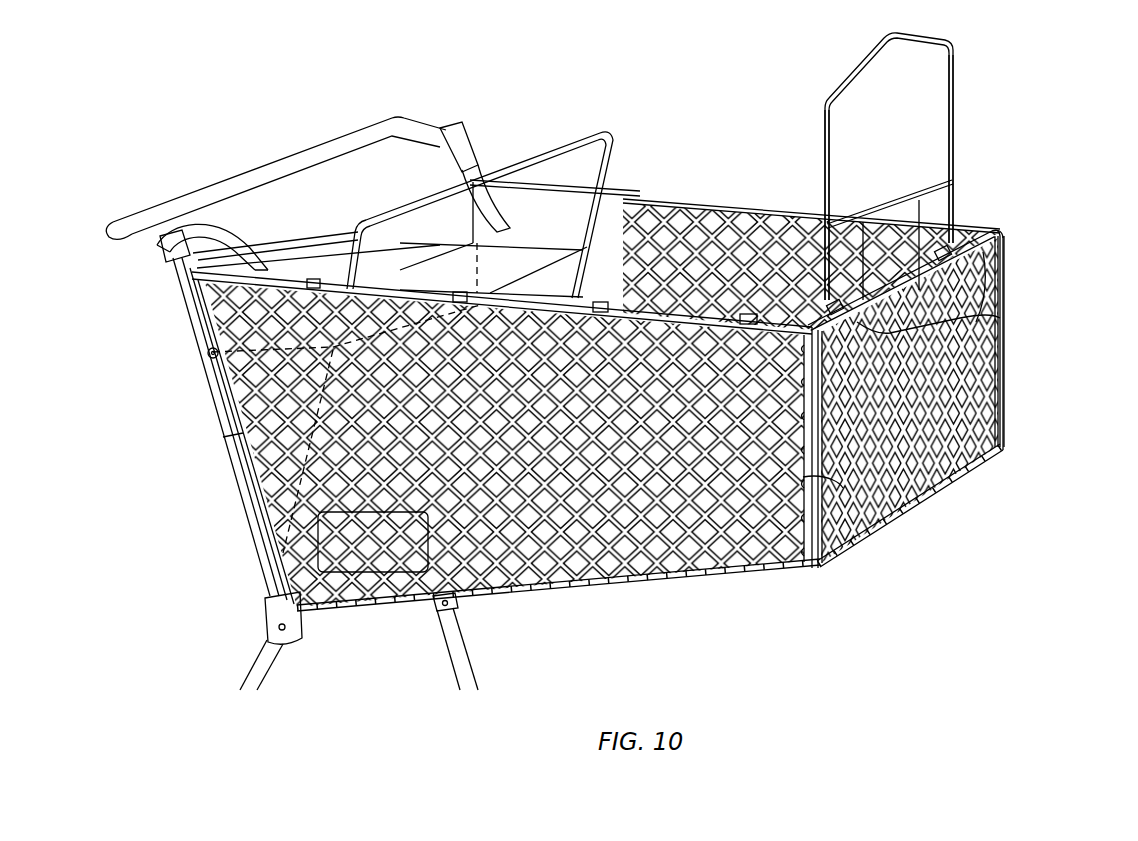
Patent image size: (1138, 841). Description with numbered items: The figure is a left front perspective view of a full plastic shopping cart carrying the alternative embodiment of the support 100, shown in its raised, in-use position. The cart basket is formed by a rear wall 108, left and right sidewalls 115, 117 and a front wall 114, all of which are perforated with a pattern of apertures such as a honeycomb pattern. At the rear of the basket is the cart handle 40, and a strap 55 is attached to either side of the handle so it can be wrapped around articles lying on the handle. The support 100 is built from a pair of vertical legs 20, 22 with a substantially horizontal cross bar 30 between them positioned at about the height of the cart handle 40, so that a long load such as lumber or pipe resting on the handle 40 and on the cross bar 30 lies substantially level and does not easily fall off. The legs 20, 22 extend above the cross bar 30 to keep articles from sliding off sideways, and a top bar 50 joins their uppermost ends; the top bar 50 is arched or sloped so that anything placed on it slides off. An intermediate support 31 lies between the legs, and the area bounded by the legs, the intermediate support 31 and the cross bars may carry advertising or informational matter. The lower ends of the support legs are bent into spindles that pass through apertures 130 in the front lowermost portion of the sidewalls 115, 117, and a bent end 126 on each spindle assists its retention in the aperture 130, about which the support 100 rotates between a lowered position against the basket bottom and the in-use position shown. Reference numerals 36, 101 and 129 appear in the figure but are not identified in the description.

The vertical leg 20 is at (829, 150).
The vertical leg 22 is at (958, 118).
The cross bar 30 is at (895, 197).
The intermediate support 31 is at (927, 213).
The retainer wire 36 is at (1000, 318).
The cart handle 40 is at (287, 157).
The top bar 50 is at (915, 37).
The strap 55 is at (222, 224).
The support 100 is at (871, 534).
The rear corner post 101 is at (986, 458).
The rear wall 108 is at (190, 398).
The front wall 114 is at (1016, 382).
The left sidewall 115 is at (591, 602).
The right sidewall 117 is at (722, 234).
The bent end 126 is at (812, 572).
The top rear corner 129 is at (1003, 251).
The aperture 130 is at (826, 570).